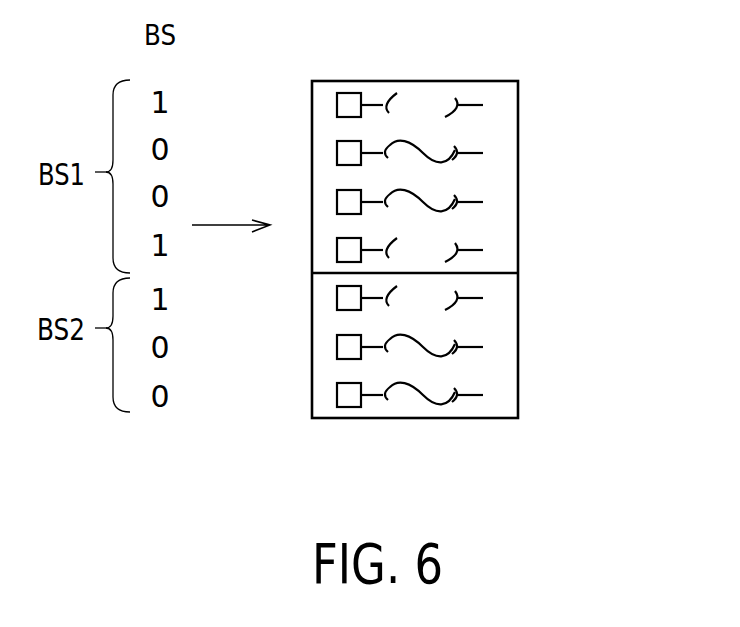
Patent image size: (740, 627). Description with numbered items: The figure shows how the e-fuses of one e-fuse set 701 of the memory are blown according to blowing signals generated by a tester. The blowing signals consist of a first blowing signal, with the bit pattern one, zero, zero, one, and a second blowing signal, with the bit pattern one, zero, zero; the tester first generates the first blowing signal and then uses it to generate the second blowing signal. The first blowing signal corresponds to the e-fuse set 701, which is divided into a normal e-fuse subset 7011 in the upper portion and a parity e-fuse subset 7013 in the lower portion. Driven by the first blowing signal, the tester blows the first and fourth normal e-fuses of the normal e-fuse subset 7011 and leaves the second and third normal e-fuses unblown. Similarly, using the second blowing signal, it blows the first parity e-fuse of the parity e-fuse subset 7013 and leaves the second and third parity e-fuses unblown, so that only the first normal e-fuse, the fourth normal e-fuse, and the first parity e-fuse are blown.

The e-fuse set 701 is at (403, 81).
The normal e-fuse subset 7011 is at (590, 80).
The parity e-fuse subset 7013 is at (590, 412).